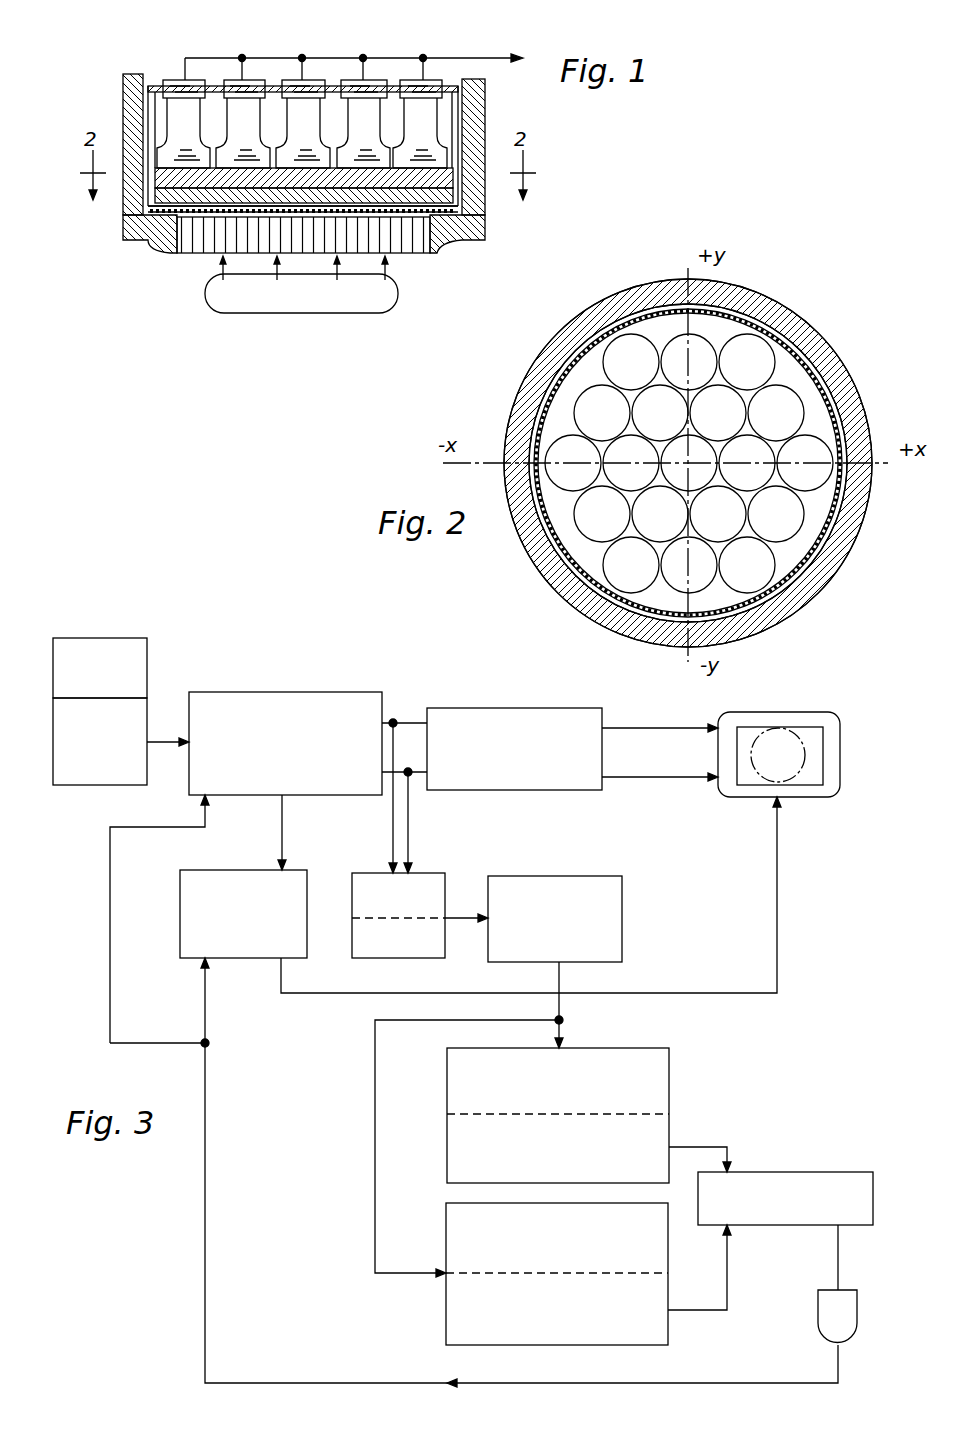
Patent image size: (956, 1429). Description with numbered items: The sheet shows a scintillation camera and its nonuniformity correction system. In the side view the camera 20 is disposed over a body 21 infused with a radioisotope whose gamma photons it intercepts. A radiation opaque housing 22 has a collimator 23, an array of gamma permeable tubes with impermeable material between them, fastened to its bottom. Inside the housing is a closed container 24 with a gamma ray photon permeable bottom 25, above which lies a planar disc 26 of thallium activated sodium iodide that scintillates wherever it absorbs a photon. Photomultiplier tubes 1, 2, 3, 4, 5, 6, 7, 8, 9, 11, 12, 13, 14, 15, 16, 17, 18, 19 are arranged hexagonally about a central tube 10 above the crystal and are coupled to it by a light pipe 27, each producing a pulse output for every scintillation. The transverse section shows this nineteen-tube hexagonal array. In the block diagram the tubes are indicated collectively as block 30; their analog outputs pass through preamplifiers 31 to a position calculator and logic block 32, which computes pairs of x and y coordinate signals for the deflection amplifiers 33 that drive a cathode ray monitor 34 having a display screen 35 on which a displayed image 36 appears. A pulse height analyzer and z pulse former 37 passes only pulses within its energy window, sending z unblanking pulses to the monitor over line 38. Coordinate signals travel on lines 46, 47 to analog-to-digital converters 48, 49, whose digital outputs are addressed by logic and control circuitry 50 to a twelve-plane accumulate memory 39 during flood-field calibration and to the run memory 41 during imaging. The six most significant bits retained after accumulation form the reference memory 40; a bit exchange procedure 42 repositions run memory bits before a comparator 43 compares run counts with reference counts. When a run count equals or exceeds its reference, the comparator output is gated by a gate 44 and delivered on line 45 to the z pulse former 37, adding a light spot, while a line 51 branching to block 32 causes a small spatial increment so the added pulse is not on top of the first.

In FIG. 2, the photomultiplier tube 1 is at (631, 362).
In FIG. 2, the photomultiplier tube 2 is at (689, 362).
In FIG. 2, the photomultiplier tube 3 is at (747, 362).
In FIG. 2, the photomultiplier tube 4 is at (602, 413).
In FIG. 2, the photomultiplier tube 5 is at (660, 413).
In FIG. 2, the photomultiplier tube 6 is at (718, 413).
In FIG. 2, the photomultiplier tube 7 is at (776, 413).
In FIG. 1, the photomultiplier tube 8 is at (183, 124).
In FIG. 2, the photomultiplier tube 8 is at (573, 463).
In FIG. 1, the photomultiplier tube 9 is at (243, 124).
In FIG. 2, the photomultiplier tube 9 is at (631, 463).
In FIG. 1, the central tube 10 is at (303, 124).
In FIG. 2, the central tube 10 is at (689, 463).
In FIG. 1, the photomultiplier tube 11 is at (363, 124).
In FIG. 2, the photomultiplier tube 11 is at (747, 463).
In FIG. 1, the photomultiplier tube 12 is at (420, 124).
In FIG. 2, the photomultiplier tube 12 is at (805, 463).
In FIG. 2, the photomultiplier tube 13 is at (602, 514).
In FIG. 2, the photomultiplier tube 14 is at (660, 514).
In FIG. 2, the photomultiplier tube 15 is at (718, 514).
In FIG. 2, the photomultiplier tube 16 is at (776, 514).
In FIG. 2, the photomultiplier tube 17 is at (631, 565).
In FIG. 2, the photomultiplier tube 18 is at (689, 565).
In FIG. 2, the photomultiplier tube 19 is at (747, 565).
In FIG. 1, the scintillation camera 20 is at (178, 43).
In FIG. 1, the body 21 is at (205, 288).
In FIG. 1, the radiation opaque housing 22 is at (475, 83).
In FIG. 2, the radiation opaque housing 22 is at (810, 360).
In FIG. 1, the collimator 23 is at (398, 262).
In FIG. 1, the closed container 24 is at (447, 87).
In FIG. 2, the closed container 24 is at (720, 318).
In FIG. 1, the gamma ray photon permeable bottom 25 is at (173, 212).
In FIG. 1, the planar disc 26 is at (173, 193).
In FIG. 1, the light pipe 27 is at (450, 200).
In FIG. 2, the light pipe 27 is at (586, 369).
In FIG. 3, the photomultiplier tubes 30 is at (96, 645).
In FIG. 3, the preamplifiers 31 is at (110, 772).
In FIG. 3, the position calculator and logic block 32 is at (282, 692).
In FIG. 3, the deflection amplifiers 33 is at (510, 708).
In FIG. 3, the monitor 34 is at (855, 762).
In FIG. 3, the display screen 35 is at (815, 765).
In FIG. 3, the displayed image 36 is at (755, 775).
In FIG. 3, the pulse height analyzer and z pulse former 37 is at (243, 870).
In FIG. 3, the line 38 is at (777, 905).
In FIG. 3, the accumulate memory 39 is at (659, 1048).
In FIG. 3, the reference memory 40 is at (660, 1110).
In FIG. 3, the run memory 41 is at (446, 1243).
In FIG. 3, the bit exchange procedure 42 is at (446, 1323).
In FIG. 3, the comparator 43 is at (820, 1172).
In FIG. 3, the gate 44 is at (830, 1328).
In FIG. 3, the line 45 is at (205, 1235).
In FIG. 3, the line 46 is at (393, 830).
In FIG. 3, the line 47 is at (408, 820).
In FIG. 3, the analog-to-digital converter 48 is at (382, 958).
In FIG. 3, the analog-to-digital converter 49 is at (437, 873).
In FIG. 3, the logic and control circuitry 50 is at (548, 876).
In FIG. 3, the line 51 is at (110, 1012).